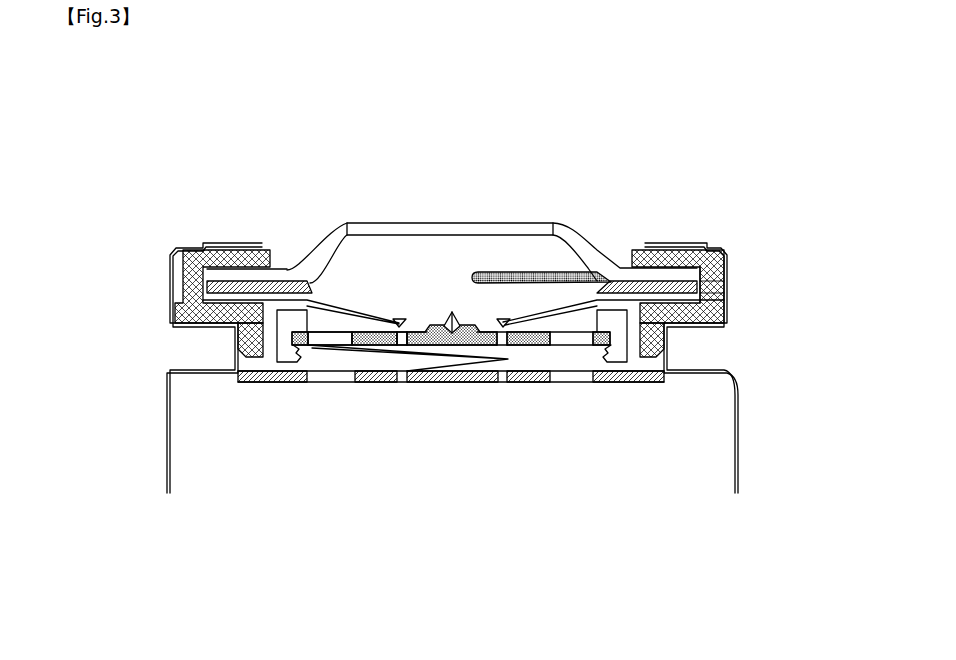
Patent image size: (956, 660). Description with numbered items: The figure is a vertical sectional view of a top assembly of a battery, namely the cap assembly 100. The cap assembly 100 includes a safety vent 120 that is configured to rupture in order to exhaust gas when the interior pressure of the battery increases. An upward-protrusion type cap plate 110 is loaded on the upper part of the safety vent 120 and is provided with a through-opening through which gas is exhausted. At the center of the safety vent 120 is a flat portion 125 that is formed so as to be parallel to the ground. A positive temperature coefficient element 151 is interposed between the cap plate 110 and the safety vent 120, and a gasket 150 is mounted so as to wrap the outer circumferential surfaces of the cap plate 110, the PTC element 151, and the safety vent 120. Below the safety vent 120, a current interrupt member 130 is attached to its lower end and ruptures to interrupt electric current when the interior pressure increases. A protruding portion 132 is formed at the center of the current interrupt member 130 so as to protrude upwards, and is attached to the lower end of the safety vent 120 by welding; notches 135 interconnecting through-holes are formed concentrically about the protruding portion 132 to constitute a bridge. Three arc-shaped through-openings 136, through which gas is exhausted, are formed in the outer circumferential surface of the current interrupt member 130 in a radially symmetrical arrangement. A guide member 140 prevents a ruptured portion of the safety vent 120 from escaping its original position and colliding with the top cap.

The cap assembly 100 is at (73, 143).
The cap plate 110 is at (576, 250).
The safety vent 120 is at (568, 302).
The flat portion 125 is at (313, 291).
The current interrupt member 130 is at (537, 344).
The protruding portion 132 is at (464, 332).
The notches 135 is at (401, 337).
The through-openings 136 is at (345, 336).
The guide member 140 is at (503, 276).
The gasket 150 is at (706, 262).
The positive temperature coefficient (PTC) element 151 is at (697, 284).